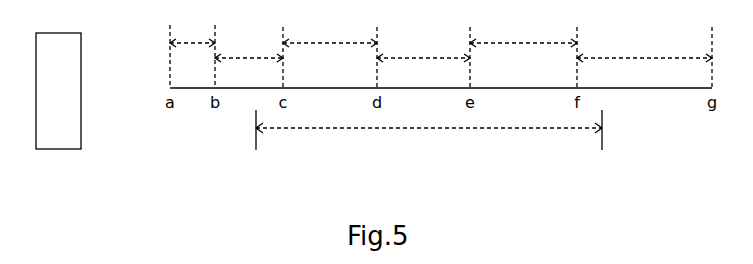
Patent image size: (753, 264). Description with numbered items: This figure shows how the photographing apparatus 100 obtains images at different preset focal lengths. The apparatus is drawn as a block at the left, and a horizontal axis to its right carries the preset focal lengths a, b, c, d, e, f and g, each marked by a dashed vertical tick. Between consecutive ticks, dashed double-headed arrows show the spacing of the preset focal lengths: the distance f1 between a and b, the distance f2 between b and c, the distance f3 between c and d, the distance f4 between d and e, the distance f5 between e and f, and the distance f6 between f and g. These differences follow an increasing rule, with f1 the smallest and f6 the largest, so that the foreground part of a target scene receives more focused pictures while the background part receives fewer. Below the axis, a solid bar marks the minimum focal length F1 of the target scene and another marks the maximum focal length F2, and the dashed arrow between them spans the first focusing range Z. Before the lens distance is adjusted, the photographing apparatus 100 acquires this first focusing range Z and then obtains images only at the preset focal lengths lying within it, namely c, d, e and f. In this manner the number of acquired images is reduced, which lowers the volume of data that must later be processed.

The photographing apparatus 100 is at (81, 127).
The distance between preset focal lengths a and b f1 is at (192, 35).
The distance between preset focal lengths b and c f2 is at (249, 51).
The distance between preset focal lengths c and d f3 is at (330, 36).
The distance between preset focal lengths d and e f4 is at (423, 50).
The distance between preset focal lengths e and f f5 is at (523, 37).
The distance between preset focal lengths f and g f6 is at (644, 50).
The first focusing range Z is at (429, 142).
The minimum focal length of target scene F1 is at (252, 143).
The maximum focal length of target scene F2 is at (602, 143).